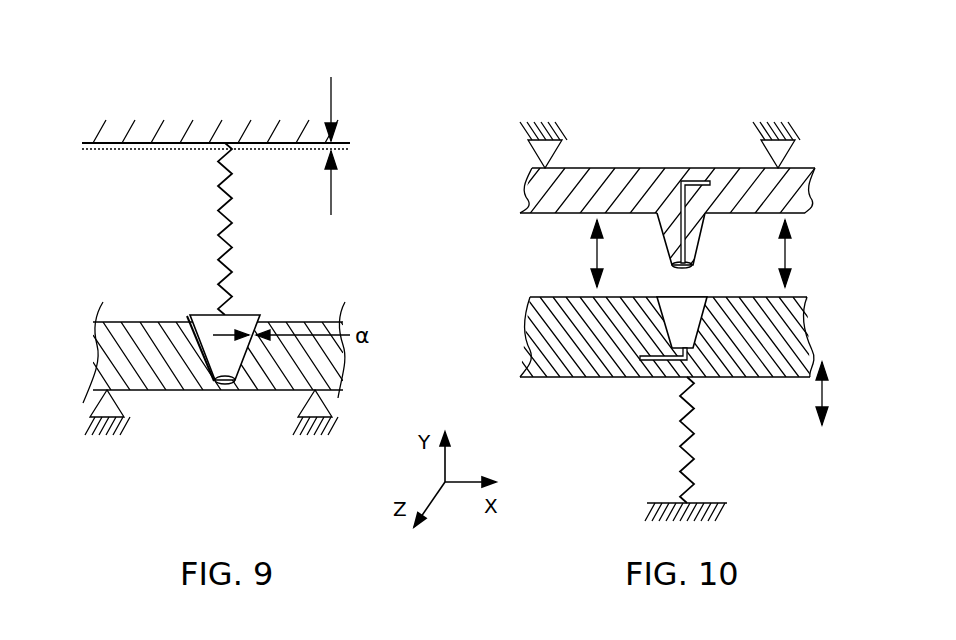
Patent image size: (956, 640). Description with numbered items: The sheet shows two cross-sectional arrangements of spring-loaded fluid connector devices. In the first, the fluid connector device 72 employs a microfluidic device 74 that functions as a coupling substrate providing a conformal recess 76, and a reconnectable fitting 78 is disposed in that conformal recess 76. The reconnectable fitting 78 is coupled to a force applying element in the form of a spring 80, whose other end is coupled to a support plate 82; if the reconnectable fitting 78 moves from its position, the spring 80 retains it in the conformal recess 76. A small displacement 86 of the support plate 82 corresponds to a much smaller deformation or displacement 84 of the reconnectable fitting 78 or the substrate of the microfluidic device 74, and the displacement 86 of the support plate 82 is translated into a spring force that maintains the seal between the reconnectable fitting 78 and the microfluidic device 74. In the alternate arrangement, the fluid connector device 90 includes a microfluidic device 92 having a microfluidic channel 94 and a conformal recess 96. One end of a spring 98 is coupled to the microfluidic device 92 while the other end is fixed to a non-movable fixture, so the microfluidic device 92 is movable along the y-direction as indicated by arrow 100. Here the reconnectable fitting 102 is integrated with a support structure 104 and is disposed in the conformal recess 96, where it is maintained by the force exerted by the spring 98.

In FIG. 9, the fluid connector device 72 is at (292, 60).
In FIG. 9, the microfluidic device 74 is at (93, 330).
In FIG. 9, the conformal recess 76 is at (196, 336).
In FIG. 9, the reconnectable fitting 78 is at (246, 315).
In FIG. 9, the spring 80 is at (233, 226).
In FIG. 9, the support plate 82 is at (95, 150).
In FIG. 9, the deformation or displacement (α) 84 is at (221, 340).
In FIG. 9, the displacement (δ) 86 is at (333, 100).
In FIG. 10, the fluid connector device 90 is at (742, 70).
In FIG. 10, the microfluidic device 92 is at (543, 297).
In FIG. 10, the microfluidic channel 94 is at (648, 364).
In FIG. 10, the conformal recess 96 is at (696, 322).
In FIG. 10, the spring 98 is at (692, 460).
In FIG. 10, the arrow 100 is at (820, 395).
In FIG. 10, the reconnectable fitting 102 is at (700, 240).
In FIG. 10, the support structure 104 is at (610, 168).